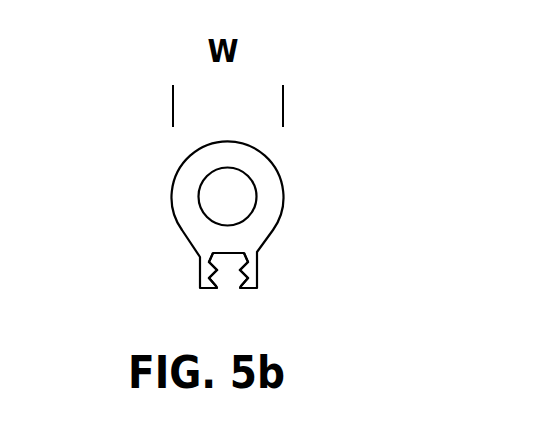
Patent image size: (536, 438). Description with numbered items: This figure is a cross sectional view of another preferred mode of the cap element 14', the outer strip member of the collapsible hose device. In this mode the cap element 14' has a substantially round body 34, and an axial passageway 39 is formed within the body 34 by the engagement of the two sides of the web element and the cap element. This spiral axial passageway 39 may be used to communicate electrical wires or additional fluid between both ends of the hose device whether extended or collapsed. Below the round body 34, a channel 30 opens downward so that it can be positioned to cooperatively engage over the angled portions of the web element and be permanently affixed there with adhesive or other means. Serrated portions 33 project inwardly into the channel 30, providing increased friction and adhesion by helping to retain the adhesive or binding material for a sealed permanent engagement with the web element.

The cap element 14' is at (244, 235).
The round body 34 is at (192, 173).
The axial passageway 39 is at (200, 205).
The channel 30 is at (212, 287).
The serrated portions 33 is at (242, 283).